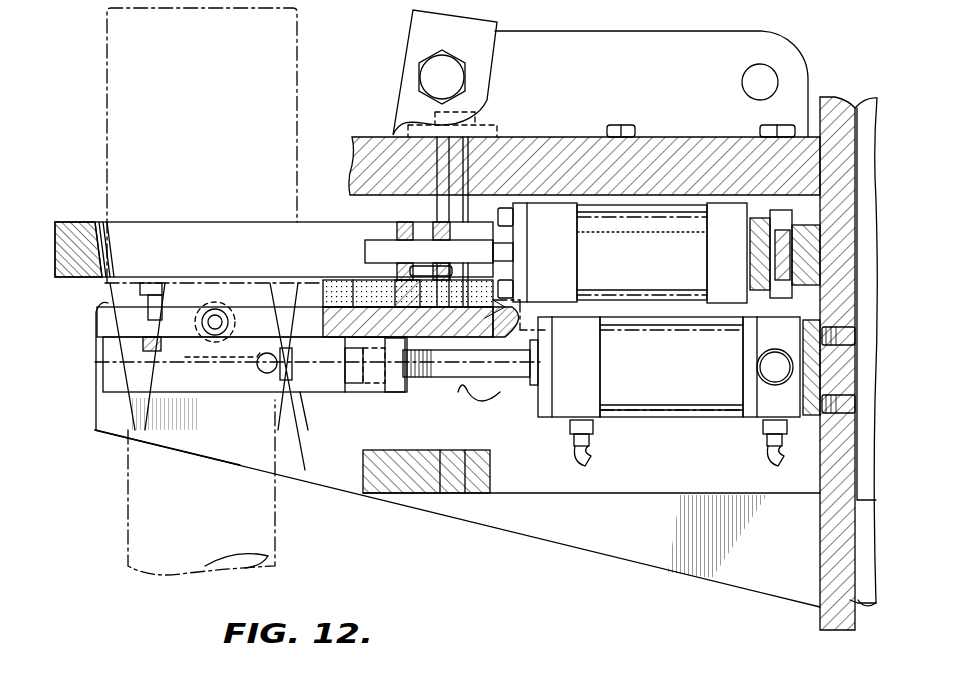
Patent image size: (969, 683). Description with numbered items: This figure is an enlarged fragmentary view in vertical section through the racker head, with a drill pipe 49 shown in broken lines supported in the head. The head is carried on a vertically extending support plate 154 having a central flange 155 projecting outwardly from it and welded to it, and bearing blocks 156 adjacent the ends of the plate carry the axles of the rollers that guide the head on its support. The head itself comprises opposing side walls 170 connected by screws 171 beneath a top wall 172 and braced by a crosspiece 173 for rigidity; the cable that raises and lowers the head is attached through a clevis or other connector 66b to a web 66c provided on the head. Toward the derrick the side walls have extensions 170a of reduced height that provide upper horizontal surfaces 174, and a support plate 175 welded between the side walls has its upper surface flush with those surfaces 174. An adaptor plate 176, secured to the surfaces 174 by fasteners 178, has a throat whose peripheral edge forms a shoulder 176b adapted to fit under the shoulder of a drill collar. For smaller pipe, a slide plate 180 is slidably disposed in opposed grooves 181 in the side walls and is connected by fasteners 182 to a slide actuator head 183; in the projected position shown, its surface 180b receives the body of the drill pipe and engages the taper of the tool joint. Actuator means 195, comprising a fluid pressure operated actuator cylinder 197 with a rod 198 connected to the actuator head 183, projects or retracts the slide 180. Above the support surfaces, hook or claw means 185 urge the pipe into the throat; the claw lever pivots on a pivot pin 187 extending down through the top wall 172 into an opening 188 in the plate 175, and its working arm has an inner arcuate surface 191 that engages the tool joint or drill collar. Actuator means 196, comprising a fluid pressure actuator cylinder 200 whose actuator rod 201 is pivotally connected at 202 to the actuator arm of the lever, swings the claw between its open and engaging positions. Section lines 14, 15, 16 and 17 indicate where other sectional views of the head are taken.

The column tube 49 is at (107, 45).
The hook or claw means 185 is at (186, 222).
The inner arcuate surface 191 is at (102, 224).
The top wall 172 is at (660, 142).
The screws 171 is at (617, 125).
The clevis or other connector 66b is at (411, 42).
The web 66c is at (556, 48).
The pivot pin 187 is at (470, 160).
The pivotal connection 202 is at (422, 232).
The actuator rod 201 is at (480, 247).
The fluid pressure actuator cylinder 200 is at (659, 253).
The actuator means 196 is at (682, 200).
The opening 188 is at (510, 305).
The surface or shoulder 176b is at (322, 296).
The adaptor plate 176 is at (320, 302).
The fasteners 178 is at (150, 282).
The surface 180b is at (298, 340).
The slide plate 180 is at (378, 396).
The upper horizontal surfaces 174 is at (98, 320).
The rod 198 is at (514, 398).
The slide actuator head 183 is at (393, 394).
The support plate 175 is at (323, 395).
The fasteners 182 is at (303, 398).
The opposed grooves 181 is at (467, 396).
The fluid pressure operated actuator cylinder 197 is at (696, 391).
The actuator means 195 is at (702, 413).
The support plate 154 is at (838, 113).
The central flange 155 is at (870, 135).
The bearing blocks 156 is at (862, 605).
The side walls 170 is at (605, 490).
The extensions 170a is at (103, 425).
The crosspiece 173 is at (405, 475).
The section line 14- 14 is at (52, 220).
The section line 15- 15 is at (78, 335).
The section line 16- 16 is at (213, 130).
The section line 17- 17 is at (452, 528).